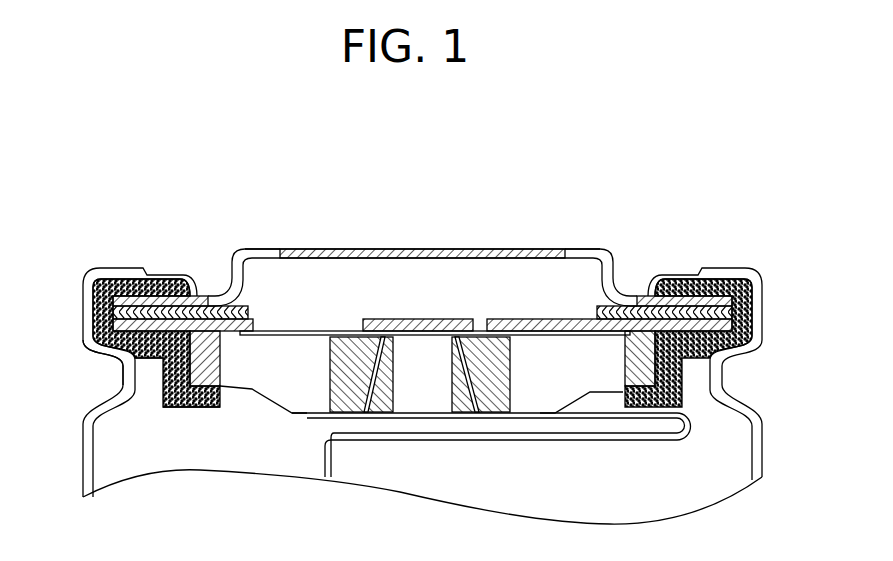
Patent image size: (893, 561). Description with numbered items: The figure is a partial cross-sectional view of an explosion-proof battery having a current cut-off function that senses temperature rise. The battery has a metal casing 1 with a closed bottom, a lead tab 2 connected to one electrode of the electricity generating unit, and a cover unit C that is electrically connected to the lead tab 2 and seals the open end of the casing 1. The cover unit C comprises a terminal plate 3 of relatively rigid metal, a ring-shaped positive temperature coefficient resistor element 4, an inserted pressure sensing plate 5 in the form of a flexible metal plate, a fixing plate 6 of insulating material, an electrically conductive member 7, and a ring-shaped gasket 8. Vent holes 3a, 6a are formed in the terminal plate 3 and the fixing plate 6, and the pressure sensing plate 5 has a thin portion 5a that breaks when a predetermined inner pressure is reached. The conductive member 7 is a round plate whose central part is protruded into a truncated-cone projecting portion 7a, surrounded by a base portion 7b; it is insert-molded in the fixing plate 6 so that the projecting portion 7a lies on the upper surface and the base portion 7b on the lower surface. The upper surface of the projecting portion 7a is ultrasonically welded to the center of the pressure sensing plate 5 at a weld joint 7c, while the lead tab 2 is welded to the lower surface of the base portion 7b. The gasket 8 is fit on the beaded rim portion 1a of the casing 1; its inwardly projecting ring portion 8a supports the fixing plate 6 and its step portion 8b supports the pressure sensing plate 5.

The metal casing 1 is at (115, 266).
The rim portion 1a is at (118, 362).
The lead tab 2 is at (612, 441).
The terminal plate 3 is at (508, 247).
The vent hole 3a is at (278, 250).
The positive temperature coefficient resistor element 4 is at (623, 308).
The inserted pressure sensing plate 5 is at (585, 318).
The thin portion 5a is at (310, 249).
The fixing plate 6 is at (422, 425).
The vent hole 6a is at (222, 380).
The electrically conductive member 7 is at (550, 361).
The projecting portion 7a is at (365, 338).
The base portion 7b is at (352, 414).
The weld joint 7c is at (430, 320).
The gasket 8 is at (178, 277).
The inwardly projecting ring portion 8a is at (198, 408).
The step portion 8b is at (150, 358).
The cover unit C is at (662, 260).